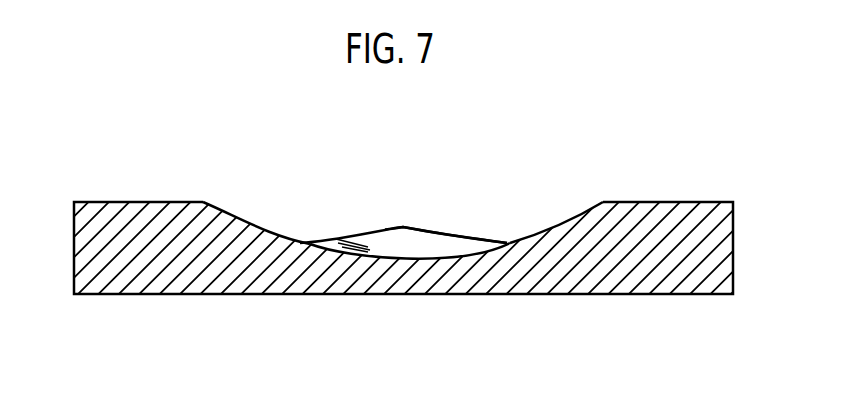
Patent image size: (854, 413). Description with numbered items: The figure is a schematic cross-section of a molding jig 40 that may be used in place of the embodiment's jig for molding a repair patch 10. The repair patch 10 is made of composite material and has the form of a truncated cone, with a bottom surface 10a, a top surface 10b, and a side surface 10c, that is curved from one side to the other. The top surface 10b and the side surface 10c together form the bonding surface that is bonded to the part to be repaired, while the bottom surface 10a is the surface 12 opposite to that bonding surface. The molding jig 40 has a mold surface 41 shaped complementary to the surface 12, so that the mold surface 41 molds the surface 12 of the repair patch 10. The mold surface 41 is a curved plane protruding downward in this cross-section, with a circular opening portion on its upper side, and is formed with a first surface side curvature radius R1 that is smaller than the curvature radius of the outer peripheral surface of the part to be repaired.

The molding jig 40 is at (641, 195).
The mold surface 41 is at (540, 232).
The first surface side curvature radius R1 is at (258, 220).
The repair patch 10 is at (346, 230).
The bottom surface 10a is at (423, 258).
The top surface 10b is at (403, 228).
The side surface 10c is at (455, 238).
The surface 12 is at (410, 296).